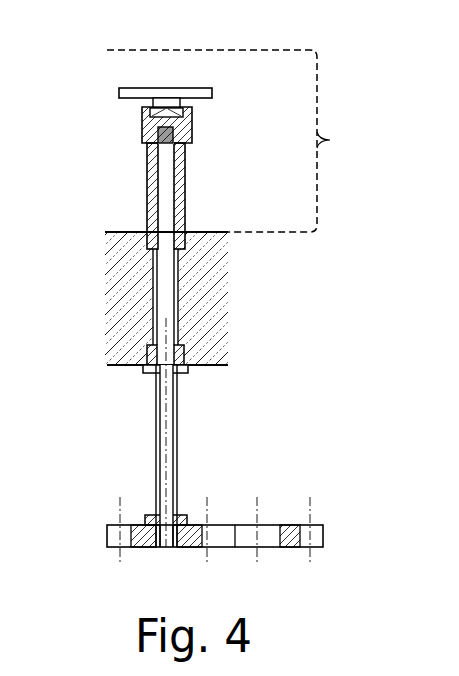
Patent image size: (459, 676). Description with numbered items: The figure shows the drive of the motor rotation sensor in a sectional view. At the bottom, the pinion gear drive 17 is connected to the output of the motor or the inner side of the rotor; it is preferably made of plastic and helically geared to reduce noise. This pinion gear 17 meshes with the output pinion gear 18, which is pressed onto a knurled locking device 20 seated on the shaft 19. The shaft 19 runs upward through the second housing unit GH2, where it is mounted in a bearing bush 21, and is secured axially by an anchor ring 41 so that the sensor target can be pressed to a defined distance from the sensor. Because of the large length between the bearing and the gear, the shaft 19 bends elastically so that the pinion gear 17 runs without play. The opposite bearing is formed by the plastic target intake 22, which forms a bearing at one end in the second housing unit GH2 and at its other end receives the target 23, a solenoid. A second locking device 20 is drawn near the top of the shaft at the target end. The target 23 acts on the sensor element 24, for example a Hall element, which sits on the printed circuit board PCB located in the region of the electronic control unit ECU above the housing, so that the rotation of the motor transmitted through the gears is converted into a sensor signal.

The pinion gear drive 17 is at (290, 545).
The pinion gear drive 18 is at (143, 548).
The shaft 19 is at (167, 428).
The locking device 20 is at (158, 130).
The bearing bush 21 is at (150, 348).
The target intake 22 is at (168, 207).
The target 23 is at (187, 110).
The sensor element 24 is at (163, 97).
The anchor ring 41 is at (188, 369).
The printed circuit board PCB is at (200, 93).
The electronic control unit ECU is at (245, 141).
The second housing unit GH2 is at (128, 308).